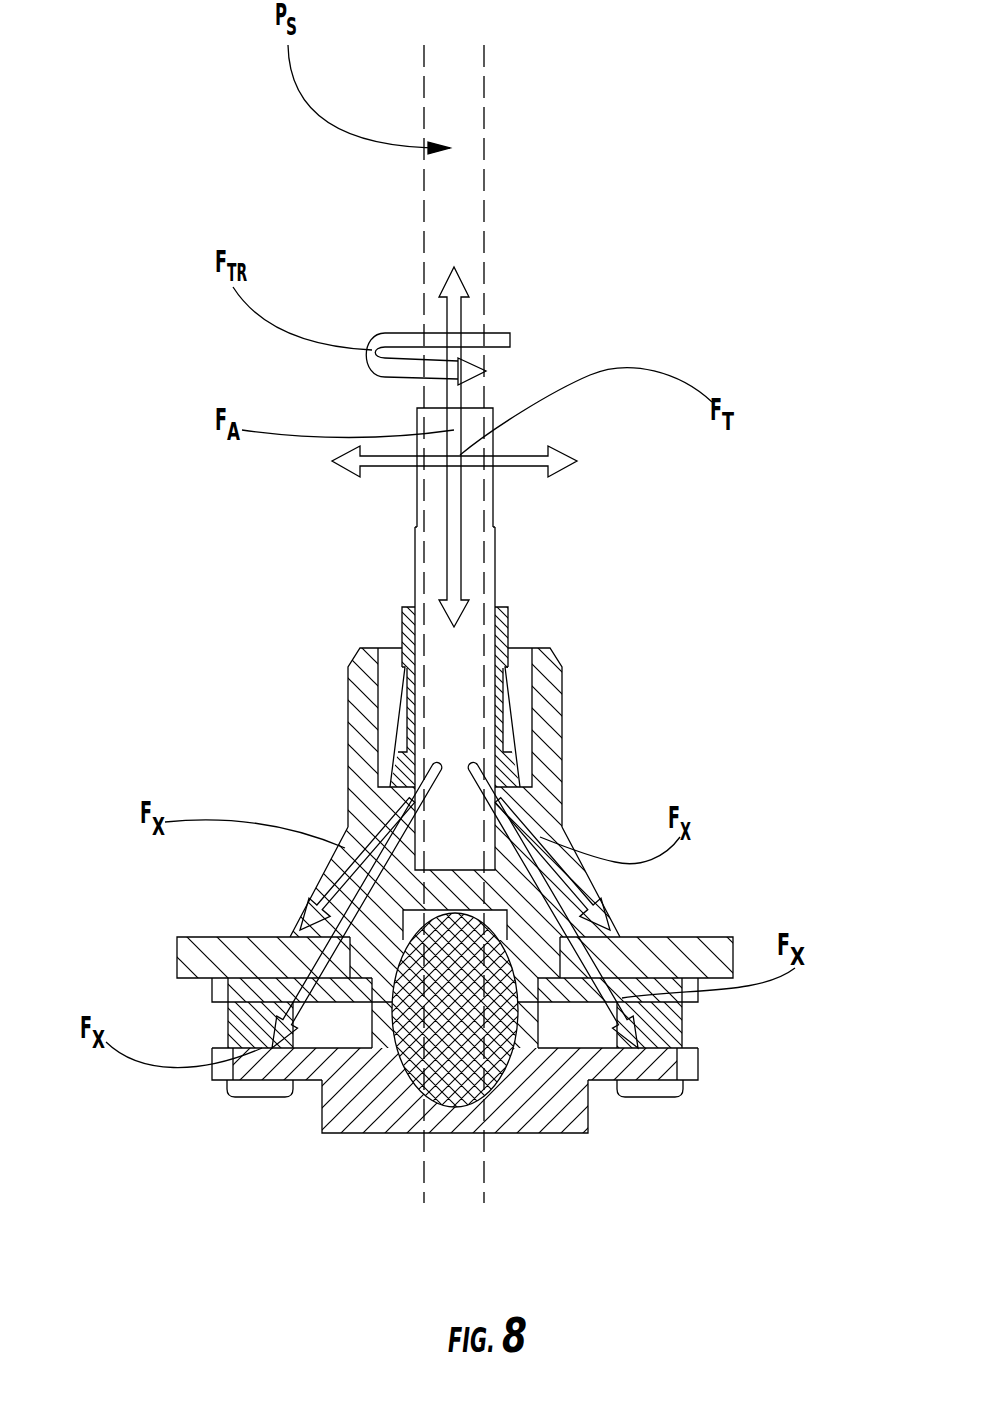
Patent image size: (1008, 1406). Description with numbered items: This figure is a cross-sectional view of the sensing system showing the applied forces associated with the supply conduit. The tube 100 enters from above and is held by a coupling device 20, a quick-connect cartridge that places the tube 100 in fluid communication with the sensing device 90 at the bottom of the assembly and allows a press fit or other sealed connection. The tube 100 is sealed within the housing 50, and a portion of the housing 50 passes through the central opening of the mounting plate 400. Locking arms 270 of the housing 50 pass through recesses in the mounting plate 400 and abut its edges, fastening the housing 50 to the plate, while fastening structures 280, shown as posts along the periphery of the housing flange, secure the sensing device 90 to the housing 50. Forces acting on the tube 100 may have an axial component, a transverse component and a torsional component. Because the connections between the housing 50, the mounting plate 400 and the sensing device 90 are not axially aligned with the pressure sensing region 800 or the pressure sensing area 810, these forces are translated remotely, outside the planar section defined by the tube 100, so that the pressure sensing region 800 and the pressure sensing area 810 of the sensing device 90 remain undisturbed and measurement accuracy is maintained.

The tube 100 is at (492, 524).
The coupling device 20 is at (508, 650).
The housing 50 is at (548, 752).
The mounting plate 400 is at (215, 937).
The locking arms 270 is at (580, 873).
The fastening structures 280 is at (670, 1020).
The pressure sensing region 800 is at (395, 968).
The pressure sensing area 810 is at (440, 1090).
The sensing device 90 is at (562, 1132).